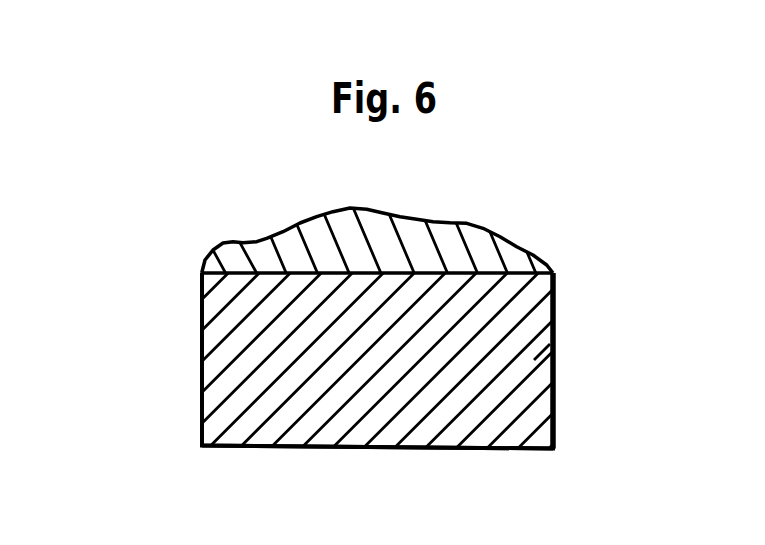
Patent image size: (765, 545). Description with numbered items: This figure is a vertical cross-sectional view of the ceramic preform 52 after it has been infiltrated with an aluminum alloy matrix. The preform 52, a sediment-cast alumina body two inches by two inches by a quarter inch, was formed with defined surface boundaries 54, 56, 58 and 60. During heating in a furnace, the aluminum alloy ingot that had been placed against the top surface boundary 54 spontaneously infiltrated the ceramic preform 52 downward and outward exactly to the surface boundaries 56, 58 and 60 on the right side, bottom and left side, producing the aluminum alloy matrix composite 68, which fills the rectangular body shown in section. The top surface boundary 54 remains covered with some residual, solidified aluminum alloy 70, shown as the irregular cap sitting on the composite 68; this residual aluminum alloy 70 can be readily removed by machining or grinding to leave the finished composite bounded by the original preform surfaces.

The ceramic preform 52 is at (186, 316).
The residual solidified aluminum alloy 70 is at (428, 228).
The surface boundary 54 is at (495, 268).
The surface boundary 60 is at (202, 400).
The surface boundary 58 is at (265, 448).
The aluminum alloy matrix composite 68 is at (555, 338).
The surface boundary 56 is at (556, 403).